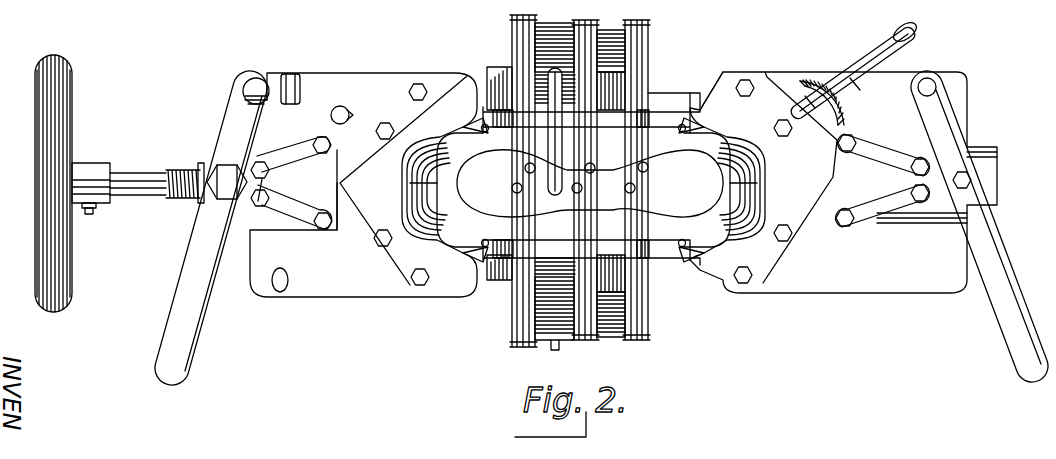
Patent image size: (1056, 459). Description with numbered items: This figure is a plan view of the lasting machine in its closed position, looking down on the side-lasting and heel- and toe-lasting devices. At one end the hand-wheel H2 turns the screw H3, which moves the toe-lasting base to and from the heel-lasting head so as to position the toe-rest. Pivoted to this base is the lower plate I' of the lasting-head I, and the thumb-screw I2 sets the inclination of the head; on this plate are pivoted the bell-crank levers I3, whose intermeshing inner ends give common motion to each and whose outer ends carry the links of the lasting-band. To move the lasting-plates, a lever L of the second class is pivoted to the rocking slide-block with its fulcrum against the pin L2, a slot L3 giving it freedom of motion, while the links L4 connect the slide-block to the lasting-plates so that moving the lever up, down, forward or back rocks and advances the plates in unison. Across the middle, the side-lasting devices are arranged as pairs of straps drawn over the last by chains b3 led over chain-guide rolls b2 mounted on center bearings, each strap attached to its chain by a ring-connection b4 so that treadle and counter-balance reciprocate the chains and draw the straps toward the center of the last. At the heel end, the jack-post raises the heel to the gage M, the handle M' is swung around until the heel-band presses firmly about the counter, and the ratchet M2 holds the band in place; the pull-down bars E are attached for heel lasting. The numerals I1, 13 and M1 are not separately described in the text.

The hand-wheel H2 is at (69, 183).
The screw H3 is at (183, 203).
The lever L is at (211, 228).
The fulcrum-pin L2 is at (264, 78).
The slot L3 is at (260, 103).
The links L4 is at (291, 183).
The head I is at (363, 173).
The thumb-screw I2 is at (348, 108).
The lower plate of the toe-lasting head I' is at (333, 271).
The frame plate I1 is at (333, 271).
The frame member 13 is at (377, 185).
The bell-crank levers I3 is at (381, 176).
The chain-guide rolls b2 is at (585, 346).
The chain b3 is at (647, 97).
The ring-connection b4 is at (652, 188).
The gage M is at (843, 182).
The handle M' is at (896, 30).
The handle M1 is at (881, 25).
The ratchet M2 is at (843, 112).
The pull-down bars E is at (852, 72).